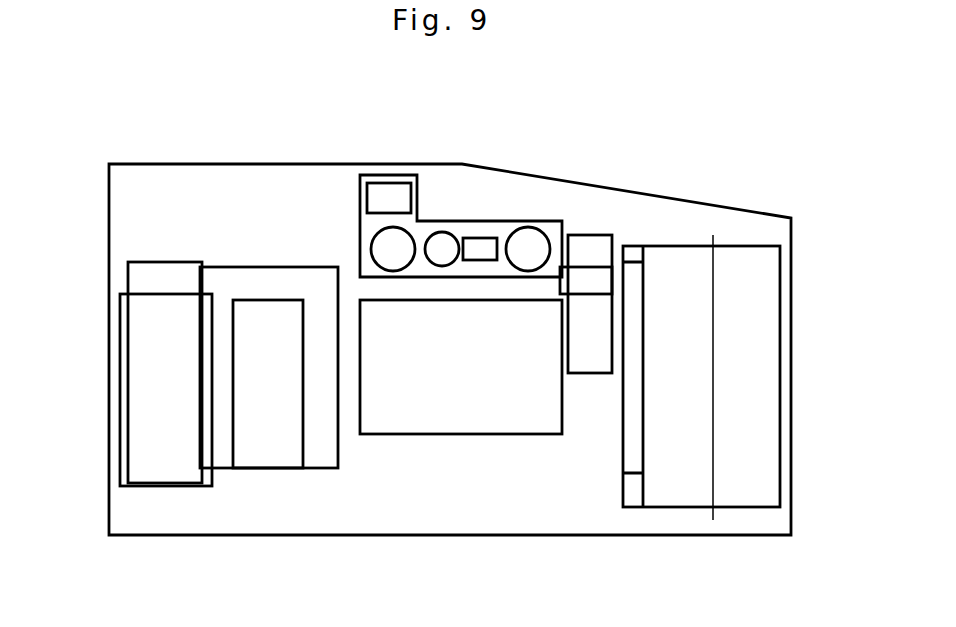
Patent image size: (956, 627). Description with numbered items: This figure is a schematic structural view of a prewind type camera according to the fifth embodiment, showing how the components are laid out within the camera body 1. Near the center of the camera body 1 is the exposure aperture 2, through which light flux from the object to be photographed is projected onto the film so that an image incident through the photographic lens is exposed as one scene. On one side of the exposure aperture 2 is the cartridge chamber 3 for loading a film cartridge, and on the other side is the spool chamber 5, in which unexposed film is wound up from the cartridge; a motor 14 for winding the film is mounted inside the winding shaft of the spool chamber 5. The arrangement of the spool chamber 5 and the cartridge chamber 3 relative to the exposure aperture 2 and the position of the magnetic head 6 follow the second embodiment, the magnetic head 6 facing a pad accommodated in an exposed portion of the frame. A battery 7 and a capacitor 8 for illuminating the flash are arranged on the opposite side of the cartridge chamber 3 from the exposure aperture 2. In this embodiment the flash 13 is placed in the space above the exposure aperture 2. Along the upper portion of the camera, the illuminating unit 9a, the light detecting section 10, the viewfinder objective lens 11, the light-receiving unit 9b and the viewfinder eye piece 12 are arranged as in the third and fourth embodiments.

The camera body 1 is at (693, 198).
The exposure aperture 2 is at (475, 434).
The cartridge chamber 3 is at (773, 343).
The spool chamber 5 is at (255, 272).
The magnetic head 6 is at (580, 267).
The battery 7 is at (120, 350).
The capacitor 8 is at (132, 274).
The illuminating unit 9a is at (371, 250).
The light-receiving unit 9b is at (538, 229).
The light detecting section 10 is at (442, 232).
The viewfinder objective lens 11 is at (485, 238).
The viewfinder eye piece 12 is at (385, 185).
The flash 13 is at (603, 235).
The motor 14 is at (285, 468).